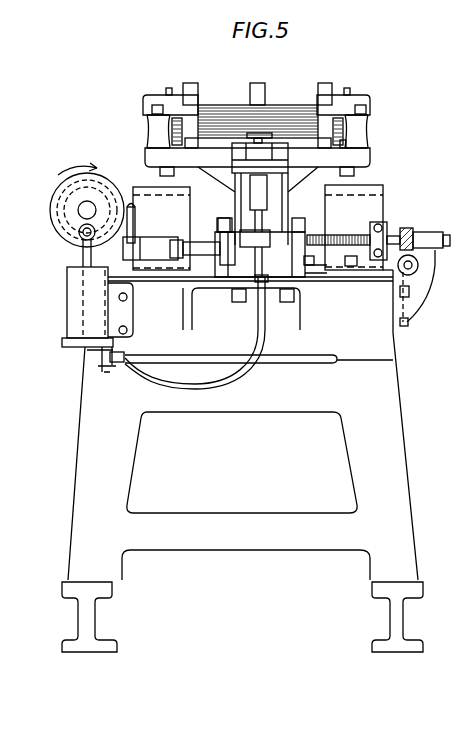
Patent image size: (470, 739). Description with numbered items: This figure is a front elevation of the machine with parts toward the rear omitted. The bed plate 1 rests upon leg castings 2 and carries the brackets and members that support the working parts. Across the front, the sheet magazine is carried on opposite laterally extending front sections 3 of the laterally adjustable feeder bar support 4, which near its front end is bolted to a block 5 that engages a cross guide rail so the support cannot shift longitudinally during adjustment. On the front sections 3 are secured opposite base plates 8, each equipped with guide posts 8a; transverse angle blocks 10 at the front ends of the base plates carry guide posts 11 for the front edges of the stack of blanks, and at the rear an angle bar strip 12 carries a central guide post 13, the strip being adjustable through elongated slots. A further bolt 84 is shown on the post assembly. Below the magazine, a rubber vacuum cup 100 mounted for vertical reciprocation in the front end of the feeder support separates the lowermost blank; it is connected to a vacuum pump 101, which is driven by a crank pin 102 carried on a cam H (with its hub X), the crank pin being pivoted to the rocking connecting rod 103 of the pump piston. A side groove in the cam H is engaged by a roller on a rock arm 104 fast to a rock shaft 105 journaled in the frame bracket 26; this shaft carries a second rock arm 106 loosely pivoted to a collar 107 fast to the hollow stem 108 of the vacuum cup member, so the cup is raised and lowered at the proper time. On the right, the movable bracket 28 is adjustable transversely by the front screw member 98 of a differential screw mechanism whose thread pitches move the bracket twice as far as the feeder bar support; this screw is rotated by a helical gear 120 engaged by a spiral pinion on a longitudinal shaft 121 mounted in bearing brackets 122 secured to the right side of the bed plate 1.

The bed plate 1 is at (368, 341).
The leg castings 2 is at (373, 379).
The front sections 3 is at (163, 158).
The feeder bar support 4 is at (236, 200).
The block 5 is at (300, 278).
The base plates 8 is at (158, 132).
The guide posts 8a is at (167, 90).
The post bolt 84 is at (340, 146).
The transverse angle blocks 10 is at (152, 101).
The guide posts 11 is at (193, 84).
The angle bar strip 12 is at (223, 104).
The central guide post 13 is at (259, 83).
The frame bracket 26 is at (157, 191).
The movable bracket 28 is at (374, 204).
The front screw member 98 is at (341, 236).
The vacuum cup 100 is at (264, 133).
The vacuum pump 101 is at (78, 306).
The crank pin 102 is at (82, 240).
The connecting rod 103 is at (83, 258).
The rock arm 104 is at (133, 228).
The rock shaft 105 is at (209, 248).
The rock arm 106 is at (236, 276).
The collar 107 is at (251, 231).
The hollow stem 108 is at (264, 220).
The helical gears 120 is at (408, 232).
The shaft 121 is at (412, 267).
The bearing brackets 122 is at (420, 292).
The cam H is at (56, 226).
The wheel hub X is at (79, 207).